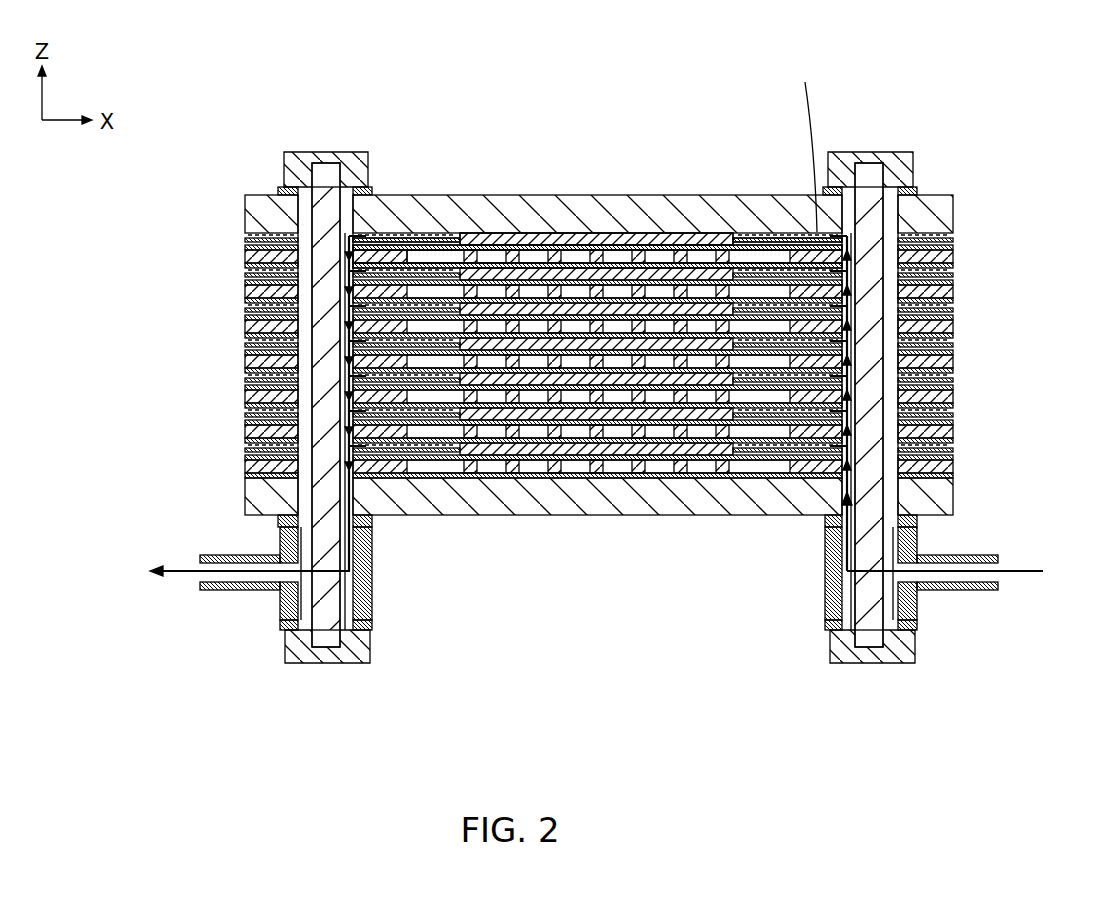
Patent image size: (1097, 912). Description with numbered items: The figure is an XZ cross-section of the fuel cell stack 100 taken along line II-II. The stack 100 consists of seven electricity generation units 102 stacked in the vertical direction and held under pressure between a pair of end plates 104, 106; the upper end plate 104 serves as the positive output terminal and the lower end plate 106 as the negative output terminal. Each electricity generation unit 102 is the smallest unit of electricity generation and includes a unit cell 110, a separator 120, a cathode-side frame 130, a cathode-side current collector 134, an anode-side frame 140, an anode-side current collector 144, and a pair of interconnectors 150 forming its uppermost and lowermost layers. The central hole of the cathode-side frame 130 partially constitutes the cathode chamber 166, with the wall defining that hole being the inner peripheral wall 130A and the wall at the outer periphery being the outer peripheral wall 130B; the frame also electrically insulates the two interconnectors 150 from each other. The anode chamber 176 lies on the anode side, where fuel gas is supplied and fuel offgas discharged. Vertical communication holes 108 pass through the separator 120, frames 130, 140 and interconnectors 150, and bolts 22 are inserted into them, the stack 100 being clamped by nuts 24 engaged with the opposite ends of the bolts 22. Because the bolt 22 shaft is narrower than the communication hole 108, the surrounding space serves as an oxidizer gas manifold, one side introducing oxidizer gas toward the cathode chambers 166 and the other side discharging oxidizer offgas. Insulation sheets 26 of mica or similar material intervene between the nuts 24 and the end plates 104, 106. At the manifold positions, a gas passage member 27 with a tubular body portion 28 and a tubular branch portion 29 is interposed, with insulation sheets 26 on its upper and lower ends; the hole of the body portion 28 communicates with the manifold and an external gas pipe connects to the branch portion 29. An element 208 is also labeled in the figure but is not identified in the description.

The fuel cell stack 100 is at (997, 286).
The electricity generation unit 102 is at (237, 234).
The end plate 104 is at (243, 222).
The end plate 106 is at (243, 492).
The communication hole 108 is at (302, 213).
The unit cell 110 is at (630, 250).
The separator 120 is at (418, 252).
The cathode-side frame 130 is at (370, 243).
The inner peripheral wall 130A is at (783, 474).
The outer peripheral wall 130B is at (955, 470).
The cathode-side current collector 134 is at (690, 262).
The anode-side frame 140 is at (395, 246).
The anode-side current collector 144 is at (585, 240).
The interconnector 150 is at (455, 262).
The cathode chamber 166 is at (762, 236).
The anode chamber 176 is at (748, 250).
The bolt 22 is at (288, 183).
The nut 24 is at (290, 160).
The insulation sheet 26 is at (280, 190).
The gas passage member 27 is at (258, 662).
The body portion 28 is at (280, 605).
The branch portion 29 is at (220, 592).
The insulating sheet 208 is at (346, 630).